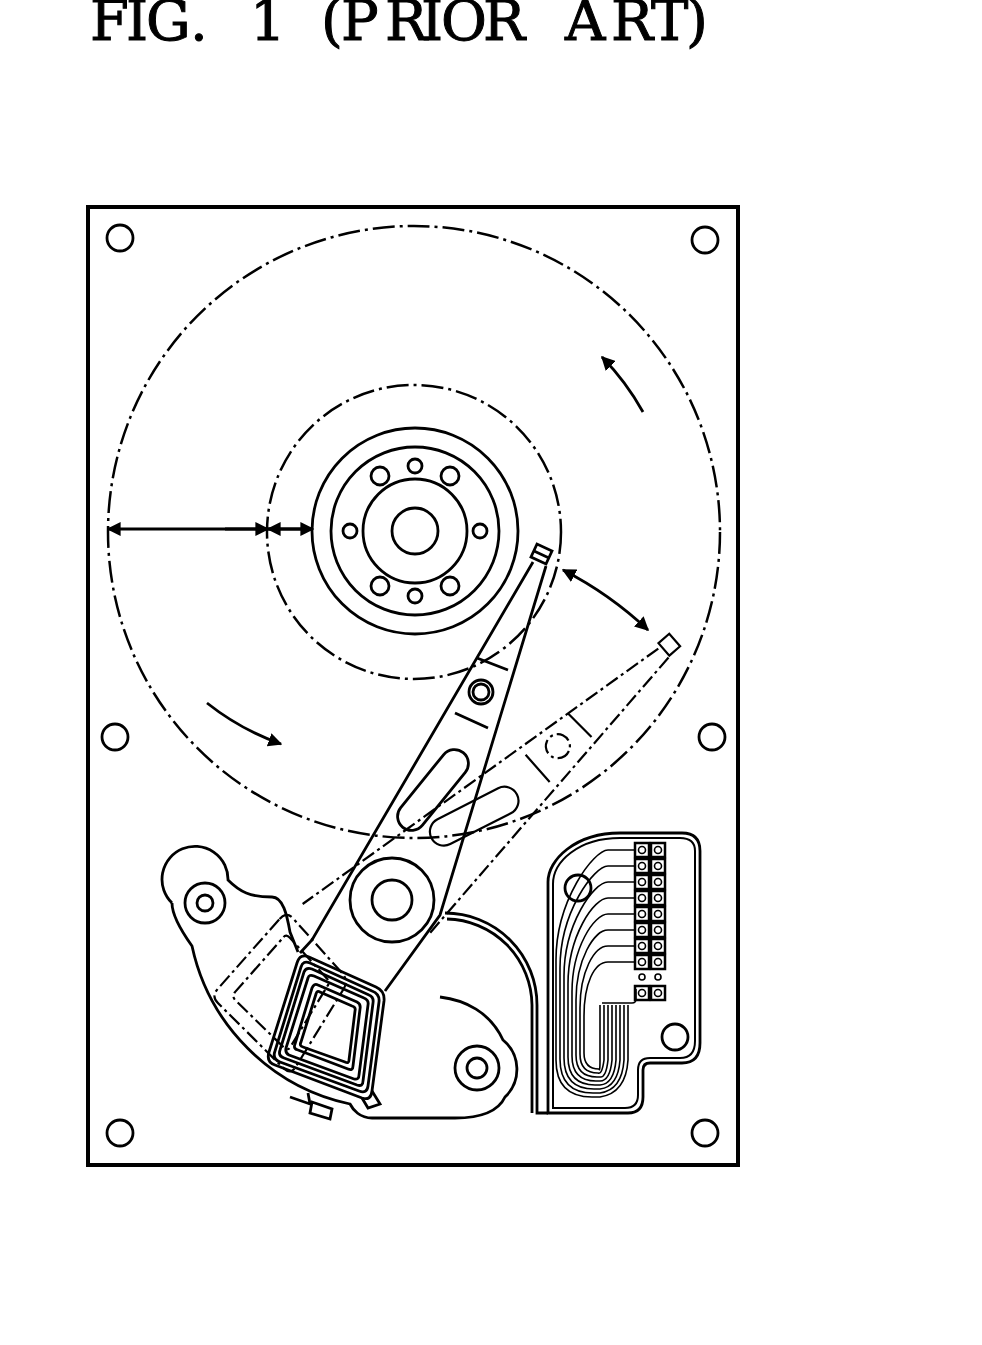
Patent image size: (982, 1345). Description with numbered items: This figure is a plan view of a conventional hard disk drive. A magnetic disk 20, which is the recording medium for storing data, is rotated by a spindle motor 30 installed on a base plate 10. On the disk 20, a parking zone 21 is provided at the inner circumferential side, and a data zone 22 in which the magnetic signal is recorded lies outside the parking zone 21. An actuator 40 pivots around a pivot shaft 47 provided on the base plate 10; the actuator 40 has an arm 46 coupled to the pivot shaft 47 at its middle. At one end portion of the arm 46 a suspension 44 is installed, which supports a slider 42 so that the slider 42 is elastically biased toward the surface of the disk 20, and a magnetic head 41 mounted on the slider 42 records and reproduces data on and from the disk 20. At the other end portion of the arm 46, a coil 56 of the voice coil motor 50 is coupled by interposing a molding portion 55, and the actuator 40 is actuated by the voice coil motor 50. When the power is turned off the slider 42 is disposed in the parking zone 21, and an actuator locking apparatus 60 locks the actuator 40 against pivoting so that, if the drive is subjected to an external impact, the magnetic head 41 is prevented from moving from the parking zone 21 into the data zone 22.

The base plate 10 is at (722, 322).
The magnetic disk 20 is at (693, 585).
The parking zone 21 is at (291, 530).
The data zone 22 is at (190, 529).
The spindle motor 30 is at (468, 492).
The actuator 40 is at (440, 867).
The magnetic head 41 is at (550, 545).
The slider 42 is at (552, 560).
The suspension 44 is at (498, 633).
The arm 46 is at (405, 795).
The pivot shaft 47 is at (392, 900).
The voice coil motor 50 is at (449, 1124).
The molding portion 55 is at (349, 1106).
The coil 56 is at (364, 1102).
The actuator locking apparatus 60 is at (301, 1120).